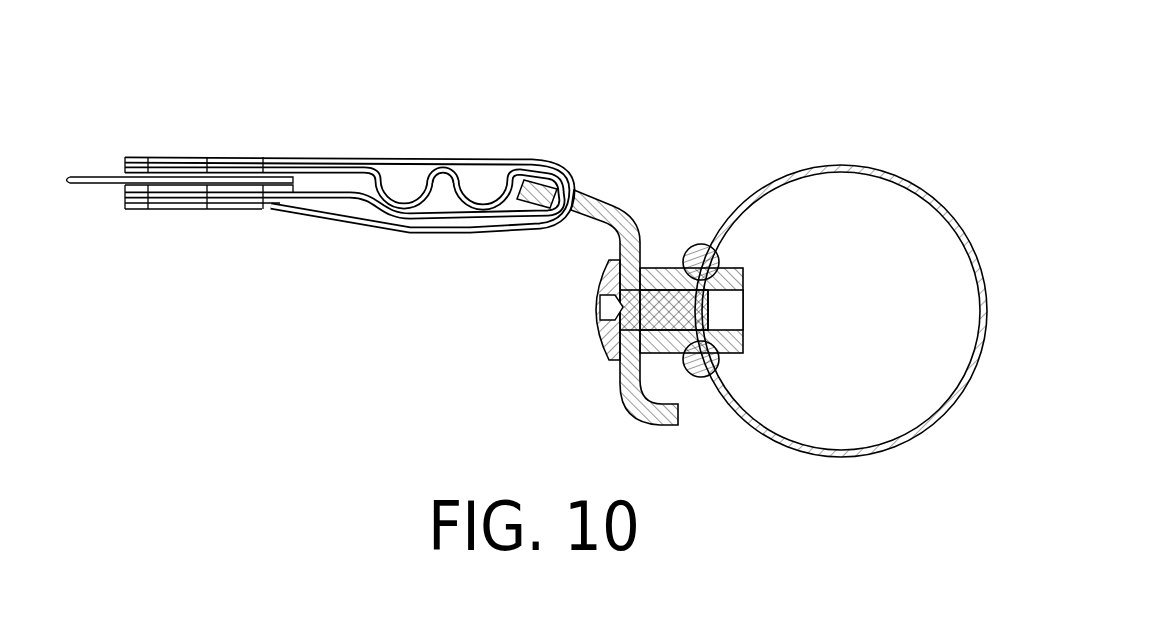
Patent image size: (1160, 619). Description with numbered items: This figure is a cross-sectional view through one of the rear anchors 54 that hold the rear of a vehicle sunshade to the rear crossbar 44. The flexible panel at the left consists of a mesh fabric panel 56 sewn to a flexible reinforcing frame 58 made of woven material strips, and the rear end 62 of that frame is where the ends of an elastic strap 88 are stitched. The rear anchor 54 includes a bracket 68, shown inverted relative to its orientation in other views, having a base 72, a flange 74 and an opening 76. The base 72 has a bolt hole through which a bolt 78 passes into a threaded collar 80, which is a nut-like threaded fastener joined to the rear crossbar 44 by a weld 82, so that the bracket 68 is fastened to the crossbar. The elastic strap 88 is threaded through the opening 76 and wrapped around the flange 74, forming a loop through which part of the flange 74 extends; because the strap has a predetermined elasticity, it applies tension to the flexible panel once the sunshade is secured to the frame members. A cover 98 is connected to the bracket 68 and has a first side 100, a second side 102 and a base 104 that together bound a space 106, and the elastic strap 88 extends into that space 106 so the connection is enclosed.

The rear crossbar 44 is at (843, 164).
The rear anchor 54 is at (560, 94).
The fabric panel 56 is at (85, 174).
The reinforcing frame 58 is at (185, 209).
The rear end 62 is at (118, 190).
The bracket 68 is at (629, 419).
The base 72 is at (621, 378).
The flange 74 is at (621, 292).
The opening 76 is at (582, 212).
The bolt 78 is at (600, 334).
The threaded collar 80 is at (745, 278).
The weld 82 is at (698, 244).
The elastic strap 88 is at (480, 181).
The cover 98 is at (348, 163).
The first side 100 is at (333, 156).
The second side 102 is at (322, 220).
The base 104 is at (579, 192).
The space 106 is at (408, 180).